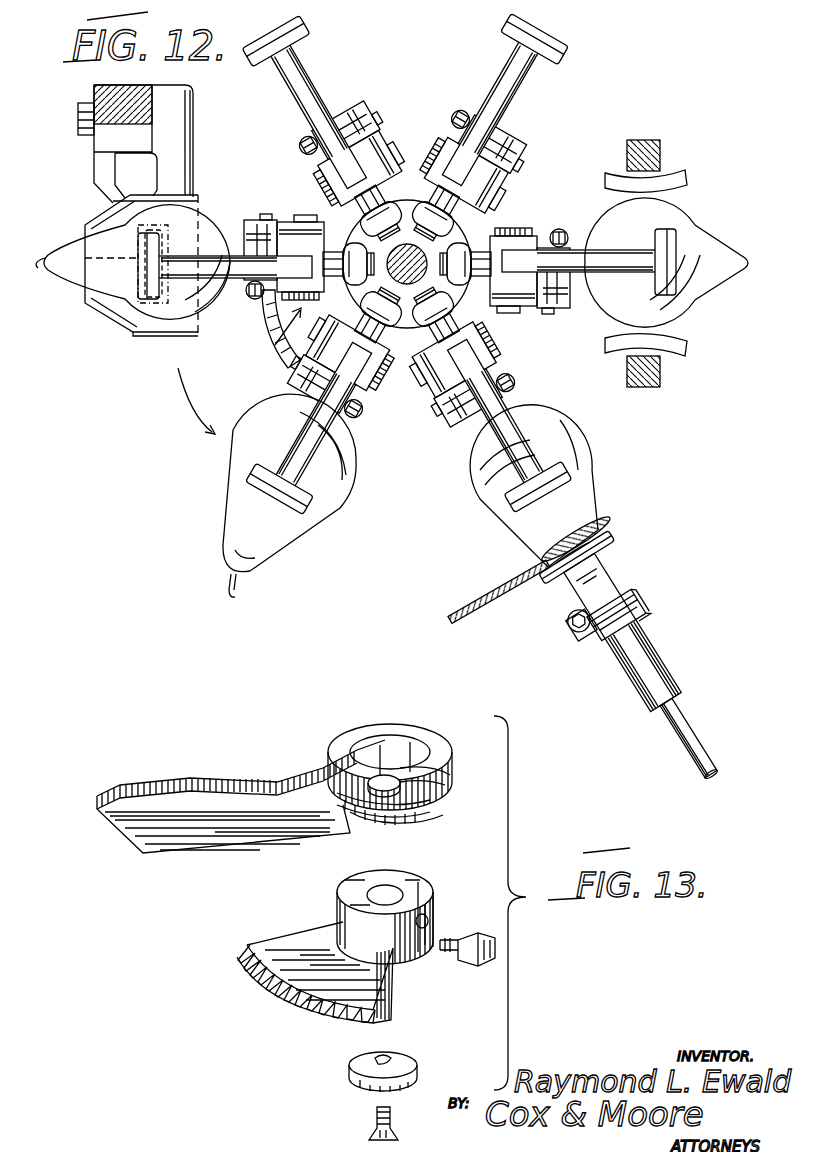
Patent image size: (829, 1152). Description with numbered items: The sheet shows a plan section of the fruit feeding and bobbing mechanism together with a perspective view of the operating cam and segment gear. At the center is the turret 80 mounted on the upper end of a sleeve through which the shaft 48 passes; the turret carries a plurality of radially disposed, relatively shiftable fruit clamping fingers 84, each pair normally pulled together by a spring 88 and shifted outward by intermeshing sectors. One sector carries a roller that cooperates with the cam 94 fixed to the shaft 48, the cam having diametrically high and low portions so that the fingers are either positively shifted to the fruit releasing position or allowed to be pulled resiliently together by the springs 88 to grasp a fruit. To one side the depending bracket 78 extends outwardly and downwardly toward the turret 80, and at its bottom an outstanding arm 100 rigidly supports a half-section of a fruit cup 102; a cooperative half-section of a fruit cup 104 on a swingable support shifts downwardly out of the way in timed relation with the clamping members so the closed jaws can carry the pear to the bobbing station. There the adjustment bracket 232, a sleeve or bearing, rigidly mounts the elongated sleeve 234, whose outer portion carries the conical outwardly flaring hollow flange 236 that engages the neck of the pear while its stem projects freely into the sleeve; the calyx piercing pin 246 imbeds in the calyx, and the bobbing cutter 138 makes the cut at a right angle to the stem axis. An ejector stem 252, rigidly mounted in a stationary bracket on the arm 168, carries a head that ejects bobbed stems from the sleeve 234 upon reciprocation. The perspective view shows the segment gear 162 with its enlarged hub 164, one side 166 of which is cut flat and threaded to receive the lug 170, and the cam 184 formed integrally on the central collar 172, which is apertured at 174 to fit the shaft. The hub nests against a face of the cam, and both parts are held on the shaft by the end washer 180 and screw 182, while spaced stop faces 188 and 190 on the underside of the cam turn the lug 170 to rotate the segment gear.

In FIG. 12, the shaft 48 is at (470, 236).
In FIG. 12, the depending bracket 78 is at (94, 95).
In FIG. 12, the turret 80 is at (268, 348).
In FIG. 12, the fruit clamping finger 84 is at (298, 63).
In FIG. 12, the spring 88 is at (300, 140).
In FIG. 12, the cam 94 is at (352, 228).
In FIG. 12, the outstanding arm 100 is at (178, 150).
In FIG. 12, the half-section of a fruit cup 102 is at (197, 197).
In FIG. 12, the half-section of a fruit cup 104 is at (130, 334).
In FIG. 12, the bobbing cutter 138 is at (462, 610).
In FIG. 12, the adjustment bracket 232 is at (607, 615).
In FIG. 12, the elongated sleeve 234 is at (622, 632).
In FIG. 12, the hollow flange 236 is at (576, 548).
In FIG. 12, the calyx piercing pin 246 is at (238, 590).
In FIG. 12, the ejector stem 252 is at (689, 739).
In FIG. 13, the segment gear 162 is at (282, 946).
In FIG. 13, the enlarged hub 164 is at (412, 888).
In FIG. 13, the flat side of hub 166 is at (426, 945).
In FIG. 13, the arm 168 is at (428, 916).
In FIG. 13, the lug 170 is at (484, 966).
In FIG. 13, the central hub or collar 172 is at (412, 728).
In FIG. 13, the aperture 174 is at (436, 772).
In FIG. 13, the end washer 180 is at (352, 1080).
In FIG. 13, the screw 182 is at (372, 1116).
In FIG. 13, the cam 184 is at (190, 778).
In FIG. 13, the stop face 188 is at (376, 742).
In FIG. 13, the stop face 190 is at (428, 806).